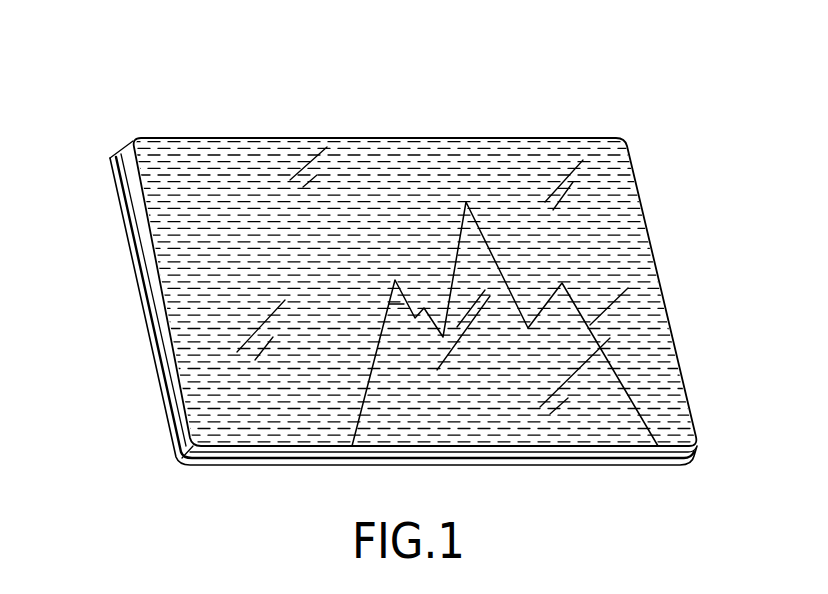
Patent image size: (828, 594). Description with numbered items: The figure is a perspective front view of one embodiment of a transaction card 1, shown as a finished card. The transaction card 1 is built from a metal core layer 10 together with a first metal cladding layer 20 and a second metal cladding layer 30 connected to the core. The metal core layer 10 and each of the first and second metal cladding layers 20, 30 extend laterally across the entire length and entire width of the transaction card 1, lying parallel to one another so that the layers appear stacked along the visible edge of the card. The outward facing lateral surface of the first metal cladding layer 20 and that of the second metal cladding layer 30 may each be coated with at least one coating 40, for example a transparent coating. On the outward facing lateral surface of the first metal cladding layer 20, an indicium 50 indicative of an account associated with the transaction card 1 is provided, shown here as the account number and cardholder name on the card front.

The transaction card 1 is at (470, 124).
The metal core layer 10 is at (157, 305).
The first metal cladding layer 20 is at (150, 230).
The second metal cladding layer 30 is at (157, 378).
The coating 40 is at (570, 183).
The indicium 50 is at (436, 218).